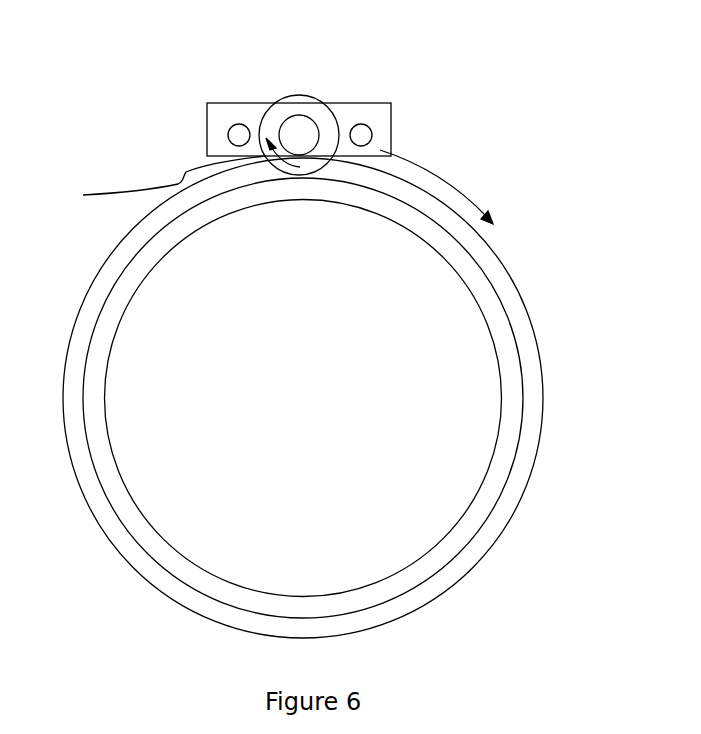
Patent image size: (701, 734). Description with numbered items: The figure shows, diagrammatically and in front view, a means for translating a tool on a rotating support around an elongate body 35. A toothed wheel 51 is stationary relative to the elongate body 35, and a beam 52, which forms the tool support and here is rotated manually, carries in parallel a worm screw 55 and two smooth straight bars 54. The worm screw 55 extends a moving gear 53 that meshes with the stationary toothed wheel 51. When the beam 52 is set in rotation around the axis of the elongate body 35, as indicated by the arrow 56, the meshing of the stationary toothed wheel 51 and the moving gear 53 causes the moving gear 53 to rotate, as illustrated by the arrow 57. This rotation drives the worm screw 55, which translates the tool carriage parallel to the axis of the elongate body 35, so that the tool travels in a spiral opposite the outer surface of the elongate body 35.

The elongate body 35 is at (157, 505).
The toothed wheel 51 is at (518, 312).
The beam 52 is at (378, 117).
The moving gear 53 is at (308, 103).
The smooth straight bars 54 is at (238, 132).
The worm screw 55 is at (288, 125).
The arrow indicating rotation of the beam 56 is at (457, 187).
The arrow indicating rotation of the moving wheel 57 is at (155, 183).